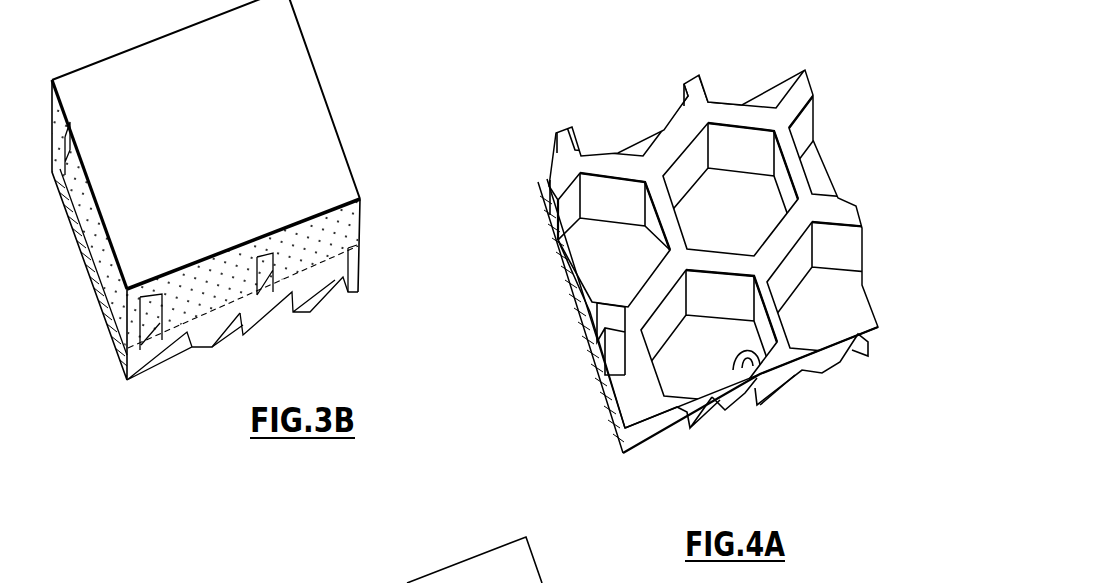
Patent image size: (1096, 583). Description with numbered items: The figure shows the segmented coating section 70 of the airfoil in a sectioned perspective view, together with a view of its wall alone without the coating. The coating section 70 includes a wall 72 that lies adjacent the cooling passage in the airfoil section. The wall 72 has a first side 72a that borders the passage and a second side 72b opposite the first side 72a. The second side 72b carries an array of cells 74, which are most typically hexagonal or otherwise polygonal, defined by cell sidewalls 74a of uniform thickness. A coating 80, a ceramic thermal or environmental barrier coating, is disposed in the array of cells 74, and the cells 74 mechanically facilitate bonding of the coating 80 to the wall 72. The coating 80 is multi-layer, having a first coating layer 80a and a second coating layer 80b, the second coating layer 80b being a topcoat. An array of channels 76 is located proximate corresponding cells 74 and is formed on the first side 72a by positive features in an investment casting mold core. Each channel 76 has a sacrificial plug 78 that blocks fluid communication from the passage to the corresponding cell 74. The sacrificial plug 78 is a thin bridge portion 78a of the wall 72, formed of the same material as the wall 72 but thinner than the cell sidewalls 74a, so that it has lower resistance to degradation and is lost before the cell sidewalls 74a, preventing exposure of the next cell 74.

In FIG. 3B, the coating section 70 is at (351, 150).
In FIG. 3B, the wall 72 is at (164, 382).
In FIG. 4A, the wall 72 is at (661, 450).
In FIG. 3B, the first side 72a is at (283, 320).
In FIG. 4A, the first side 72a is at (770, 393).
In FIG. 3B, the second side 72b is at (124, 328).
In FIG. 4A, the second side 72b is at (878, 318).
In FIG. 3B, the cells 74 is at (179, 303).
In FIG. 4A, the cells 74 is at (730, 170).
In FIG. 4A, the cell sidewalls 74a is at (800, 257).
In FIG. 4A, the channels 76 is at (746, 420).
In FIG. 3B, the sacrificial plug 78 is at (230, 297).
In FIG. 4A, the sacrificial plug 78 is at (720, 376).
In FIG. 4A, the thin bridge portion 78a is at (768, 393).
In FIG. 3B, the coating 80 is at (313, 122).
In FIG. 3B, the first coating layer 80a is at (353, 254).
In FIG. 3B, the second coating layer 80b is at (362, 208).